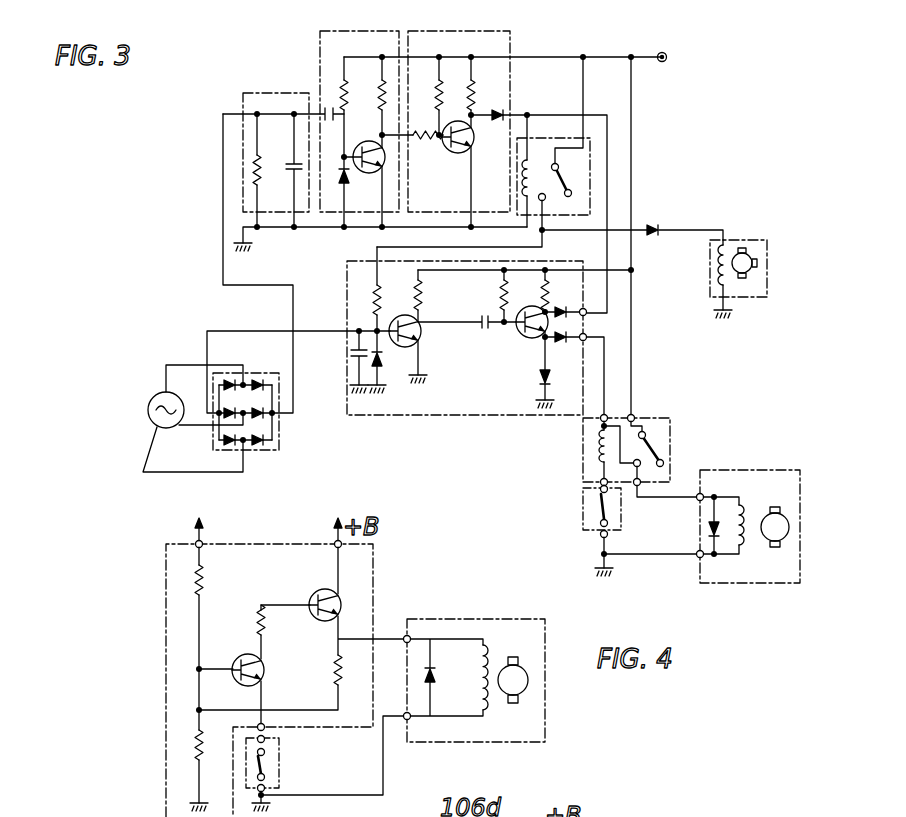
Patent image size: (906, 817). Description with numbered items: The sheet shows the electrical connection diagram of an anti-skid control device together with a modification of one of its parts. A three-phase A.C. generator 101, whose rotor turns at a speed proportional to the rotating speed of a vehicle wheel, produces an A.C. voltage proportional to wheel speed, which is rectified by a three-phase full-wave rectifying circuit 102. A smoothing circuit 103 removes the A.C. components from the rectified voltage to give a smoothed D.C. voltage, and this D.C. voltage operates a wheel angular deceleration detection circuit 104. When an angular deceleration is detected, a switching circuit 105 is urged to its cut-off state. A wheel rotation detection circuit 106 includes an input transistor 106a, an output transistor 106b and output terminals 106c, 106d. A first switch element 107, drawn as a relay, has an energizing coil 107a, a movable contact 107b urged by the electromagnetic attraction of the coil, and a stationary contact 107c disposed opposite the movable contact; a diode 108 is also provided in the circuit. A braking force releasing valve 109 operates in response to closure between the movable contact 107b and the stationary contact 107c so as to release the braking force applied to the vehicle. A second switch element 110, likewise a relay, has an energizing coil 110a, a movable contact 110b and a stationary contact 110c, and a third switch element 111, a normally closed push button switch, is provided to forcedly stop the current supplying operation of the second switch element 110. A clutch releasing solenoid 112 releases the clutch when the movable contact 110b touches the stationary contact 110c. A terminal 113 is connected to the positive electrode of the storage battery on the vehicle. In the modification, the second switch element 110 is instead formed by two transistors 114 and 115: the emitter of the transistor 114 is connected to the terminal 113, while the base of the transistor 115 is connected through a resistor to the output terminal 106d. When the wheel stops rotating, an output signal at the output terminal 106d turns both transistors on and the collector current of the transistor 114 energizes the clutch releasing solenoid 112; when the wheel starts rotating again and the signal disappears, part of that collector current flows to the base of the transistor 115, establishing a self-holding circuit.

In FIG. 3, the three-phase A.C. generator 101 is at (148, 410).
In FIG. 3, the three-phase full-wave rectifying circuit 102 is at (279, 425).
In FIG. 3, the smoothing circuit 103 is at (272, 93).
In FIG. 3, the wheel angular deceleration detection circuit 104 is at (320, 58).
In FIG. 3, the switching circuit 105 is at (510, 46).
In FIG. 3, the wheel rotation detection circuit 106 is at (523, 348).
In FIG. 3, the input transistor 106a is at (413, 341).
In FIG. 3, the output transistor 106b is at (519, 334).
In FIG. 3, the output terminal 106c is at (587, 315).
In FIG. 3, the output terminal 106d is at (587, 340).
In FIG. 4, the output terminal 106d is at (232, 527).
In FIG. 3, the first switch element 107 is at (529, 155).
In FIG. 3, the energizing coil 107a is at (531, 160).
In FIG. 3, the movable contact 107b is at (577, 178).
In FIG. 3, the stationary contact 107c is at (492, 225).
In FIG. 3, the diode 108 is at (654, 227).
In FIG. 3, the braking force releasing valve 109 is at (751, 240).
In FIG. 3, the second switch element 110 is at (629, 473).
In FIG. 4, the second switch element 110 is at (249, 665).
In FIG. 3, the energizing coil 110a is at (598, 445).
In FIG. 3, the movable contact 110b is at (661, 455).
In FIG. 3, the stationary contact 110c is at (639, 467).
In FIG. 3, the third switch element 111 is at (583, 503).
In FIG. 4, the third switch element 111 is at (280, 776).
In FIG. 3, the clutch releasing solenoid 112 is at (760, 470).
In FIG. 4, the clutch releasing solenoid 112 is at (480, 619).
In FIG. 3, the terminal 113 is at (663, 62).
In FIG. 4, the transistor 114 is at (313, 594).
In FIG. 4, the transistor 115 is at (263, 659).